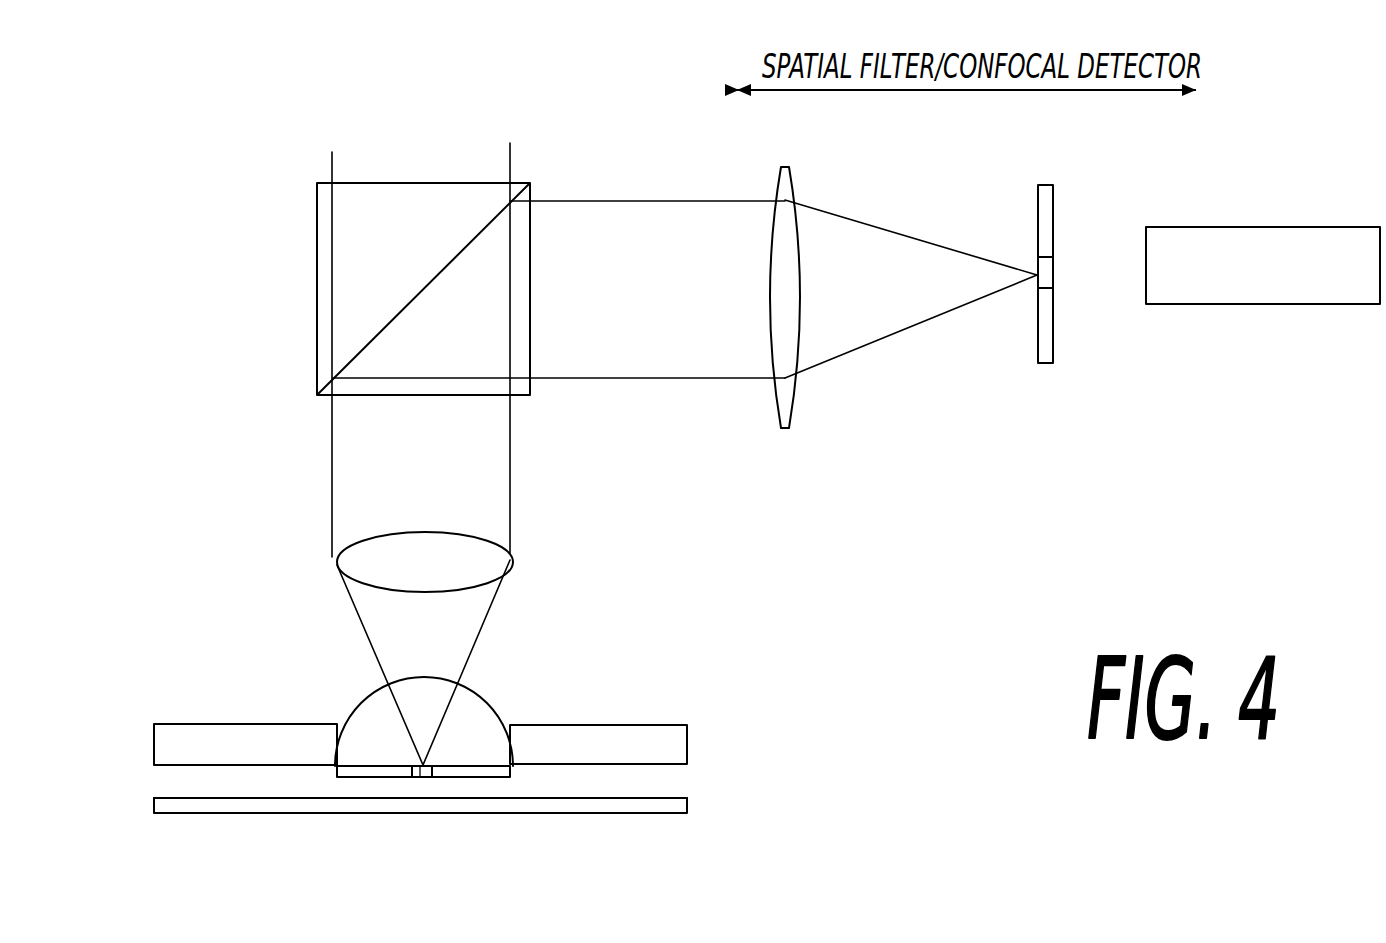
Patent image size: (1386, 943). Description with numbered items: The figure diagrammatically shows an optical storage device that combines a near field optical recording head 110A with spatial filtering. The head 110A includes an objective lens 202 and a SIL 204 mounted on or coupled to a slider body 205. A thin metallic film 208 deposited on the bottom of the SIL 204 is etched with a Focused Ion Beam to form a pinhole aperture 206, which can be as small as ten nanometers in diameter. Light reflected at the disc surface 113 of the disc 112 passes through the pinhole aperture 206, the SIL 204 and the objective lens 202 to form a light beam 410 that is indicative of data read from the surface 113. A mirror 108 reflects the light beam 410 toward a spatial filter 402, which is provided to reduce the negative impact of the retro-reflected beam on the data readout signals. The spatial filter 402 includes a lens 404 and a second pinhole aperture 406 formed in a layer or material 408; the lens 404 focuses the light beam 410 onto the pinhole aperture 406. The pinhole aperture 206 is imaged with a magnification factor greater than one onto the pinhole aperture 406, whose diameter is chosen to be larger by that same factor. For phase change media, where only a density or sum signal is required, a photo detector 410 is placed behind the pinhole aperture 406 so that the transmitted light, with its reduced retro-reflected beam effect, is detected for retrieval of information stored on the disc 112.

The mirror 108 is at (302, 282).
The light beam 410 is at (610, 218).
The lens 404 is at (790, 182).
The spatial filter 402 is at (882, 378).
The layer or material 408 is at (1048, 200).
The second pinhole aperture 406 is at (1046, 262).
The objective lens 202 is at (470, 559).
The SIL 204 is at (462, 716).
The slider body 205 is at (689, 745).
The aperture 206 is at (426, 778).
The thin metallic film 208 is at (350, 770).
The near field optical recording head 110A is at (471, 769).
The disc 112 is at (690, 806).
The disc surface 113 is at (183, 797).